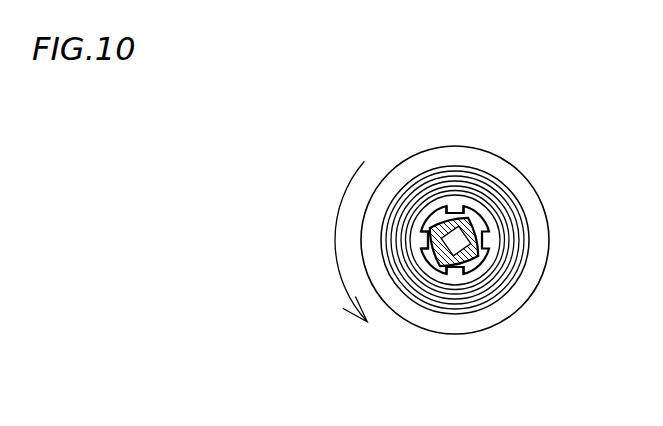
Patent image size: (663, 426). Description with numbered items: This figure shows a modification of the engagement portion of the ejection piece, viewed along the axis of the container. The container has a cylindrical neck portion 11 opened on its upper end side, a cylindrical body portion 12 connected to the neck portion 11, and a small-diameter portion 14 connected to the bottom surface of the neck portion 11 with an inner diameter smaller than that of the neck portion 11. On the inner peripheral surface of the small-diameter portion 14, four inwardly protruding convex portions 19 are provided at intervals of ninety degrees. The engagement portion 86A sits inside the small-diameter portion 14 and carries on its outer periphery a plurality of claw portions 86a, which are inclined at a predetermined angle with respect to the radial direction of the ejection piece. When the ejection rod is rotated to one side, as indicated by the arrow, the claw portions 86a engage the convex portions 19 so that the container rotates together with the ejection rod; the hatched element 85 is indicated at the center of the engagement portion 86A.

The neck portion 11 is at (528, 243).
The body portion 12 is at (512, 307).
The small-diameter portion 14 is at (487, 232).
The convex portions 19 is at (457, 208).
The cam member (82) 85 is at (468, 216).
The claw portions 86a is at (422, 218).
The engagement portion 86A is at (452, 268).